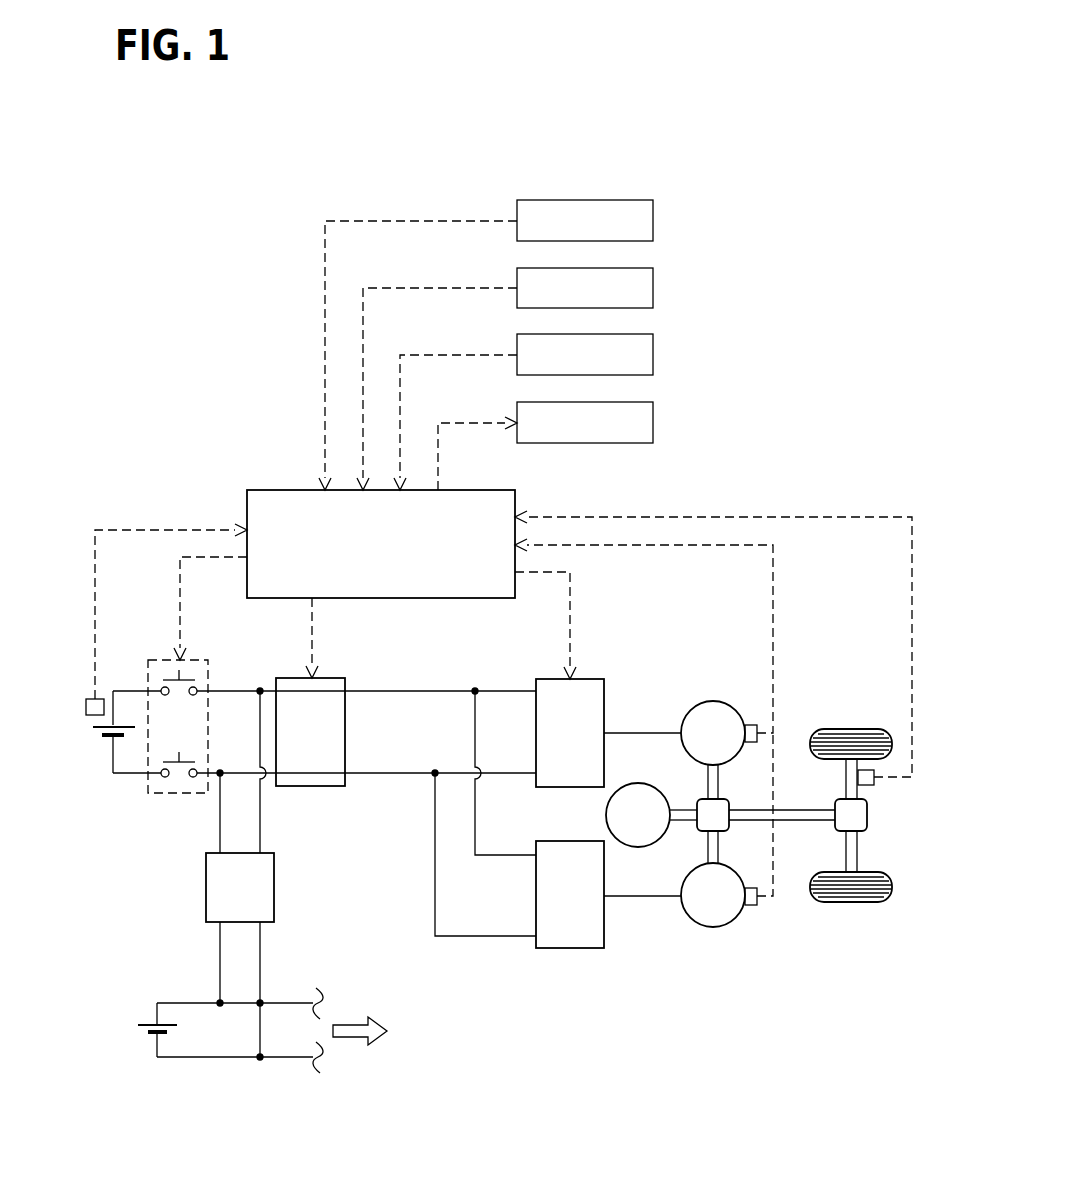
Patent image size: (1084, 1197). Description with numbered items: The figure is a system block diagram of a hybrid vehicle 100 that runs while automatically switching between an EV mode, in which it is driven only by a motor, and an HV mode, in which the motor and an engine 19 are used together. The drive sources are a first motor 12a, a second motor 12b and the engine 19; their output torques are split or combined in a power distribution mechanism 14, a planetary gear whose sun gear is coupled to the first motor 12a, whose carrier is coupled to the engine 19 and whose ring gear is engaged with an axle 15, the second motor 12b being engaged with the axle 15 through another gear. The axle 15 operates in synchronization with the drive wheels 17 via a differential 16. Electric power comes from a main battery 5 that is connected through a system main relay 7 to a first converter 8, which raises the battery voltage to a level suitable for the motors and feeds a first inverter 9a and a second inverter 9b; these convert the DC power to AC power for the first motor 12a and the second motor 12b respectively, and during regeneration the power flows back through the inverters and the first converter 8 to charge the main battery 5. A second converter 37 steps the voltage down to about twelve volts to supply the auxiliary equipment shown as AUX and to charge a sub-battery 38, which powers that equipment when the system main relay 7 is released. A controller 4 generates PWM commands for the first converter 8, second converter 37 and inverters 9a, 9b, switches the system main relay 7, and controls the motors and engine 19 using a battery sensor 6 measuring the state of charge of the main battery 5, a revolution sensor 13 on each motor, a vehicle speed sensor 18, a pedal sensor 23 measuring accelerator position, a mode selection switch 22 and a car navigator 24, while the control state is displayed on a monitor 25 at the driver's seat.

The hybrid vehicle 100 is at (801, 102).
The controller 4 is at (265, 490).
The main battery 5 is at (102, 740).
The battery sensor 6 is at (84, 696).
The system main relay 7 is at (196, 660).
The first converter 8 is at (328, 678).
The first inverter 9a is at (592, 679).
The second inverter 9b is at (592, 948).
The first motor 12a is at (713, 701).
The second motor 12b is at (707, 927).
The revolution sensor 13 is at (752, 725).
The power distribution mechanism 14 is at (697, 804).
The axle 15 is at (796, 812).
The differential 16 is at (867, 825).
The drive wheels 17 is at (849, 728).
The vehicle speed sensor 18 is at (874, 783).
The engine 19 is at (606, 814).
The mode selection switch 22 is at (653, 221).
The pedal sensor 23 is at (653, 288).
The car navigator 24 is at (653, 355).
The monitor 25 is at (653, 423).
The second converter 37 is at (206, 886).
The sub-battery 38 is at (147, 1020).